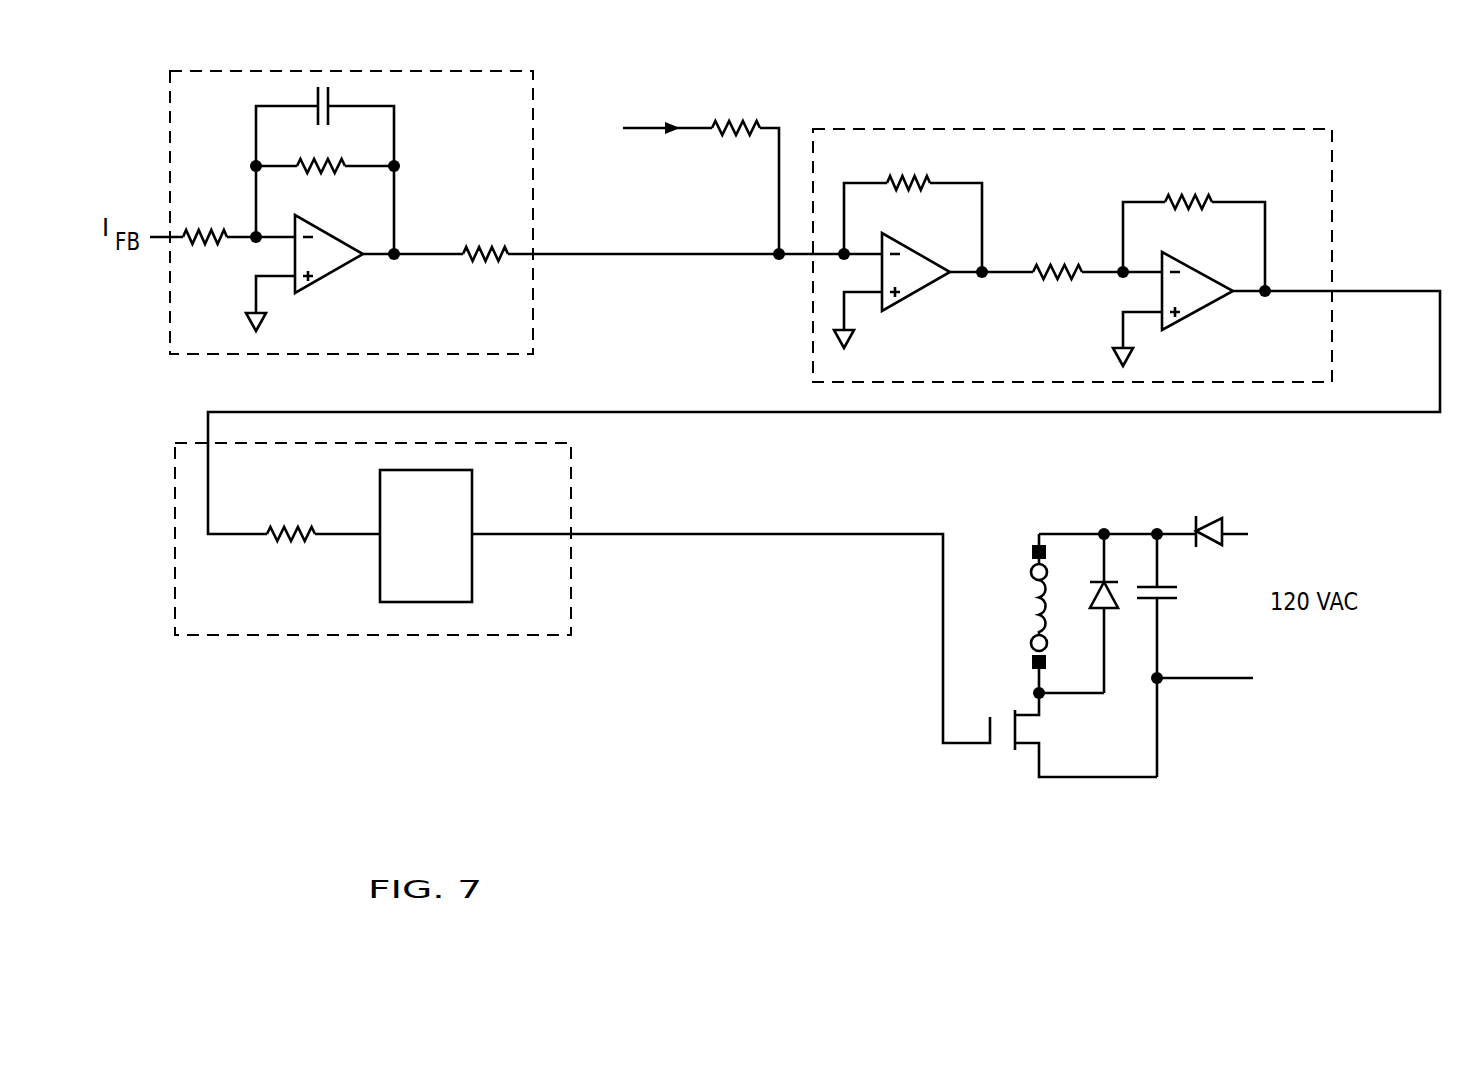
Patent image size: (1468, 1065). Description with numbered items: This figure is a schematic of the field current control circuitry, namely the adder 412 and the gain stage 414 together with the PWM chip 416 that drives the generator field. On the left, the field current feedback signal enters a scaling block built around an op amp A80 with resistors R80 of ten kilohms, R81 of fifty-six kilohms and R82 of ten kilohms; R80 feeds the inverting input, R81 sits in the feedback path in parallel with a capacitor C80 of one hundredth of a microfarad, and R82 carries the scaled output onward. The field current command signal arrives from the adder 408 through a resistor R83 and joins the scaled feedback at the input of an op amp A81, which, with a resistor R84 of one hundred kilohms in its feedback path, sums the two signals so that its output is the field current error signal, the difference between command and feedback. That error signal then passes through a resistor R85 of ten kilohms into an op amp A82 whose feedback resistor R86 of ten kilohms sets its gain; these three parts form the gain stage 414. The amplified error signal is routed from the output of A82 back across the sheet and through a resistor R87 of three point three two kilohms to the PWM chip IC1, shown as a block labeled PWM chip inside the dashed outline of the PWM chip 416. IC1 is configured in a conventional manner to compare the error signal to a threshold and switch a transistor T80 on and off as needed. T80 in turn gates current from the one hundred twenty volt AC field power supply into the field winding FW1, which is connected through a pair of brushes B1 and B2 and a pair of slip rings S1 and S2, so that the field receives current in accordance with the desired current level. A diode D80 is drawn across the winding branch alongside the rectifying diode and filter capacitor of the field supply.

The resistor R80 is at (205, 221).
The resistor R81 is at (325, 182).
The capacitor C80 is at (299, 99).
The op amp A80 is at (347, 263).
The resistor R82 is at (485, 239).
The resistor R83 is at (745, 172).
The adder 408 is at (610, 160).
The resistor R84 is at (913, 209).
The op amp A81 is at (933, 285).
The resistor R85 is at (1057, 256).
The resistor R86 is at (1194, 228).
The op amp A82 is at (1217, 303).
The adder 412 is at (1132, 255).
The gain stage 414 is at (1332, 192).
The PWM chip 416 is at (275, 635).
The resistor R87 is at (291, 520).
The PWM chip IC1 is at (472, 502).
The transistor T80 is at (1018, 723).
The field winding FW1 is at (1004, 613).
The brush B1 is at (1022, 664).
The brush B2 is at (1019, 547).
The slip ring S1 is at (1022, 640).
The slip ring S2 is at (1020, 572).
The diode D80 is at (1093, 610).